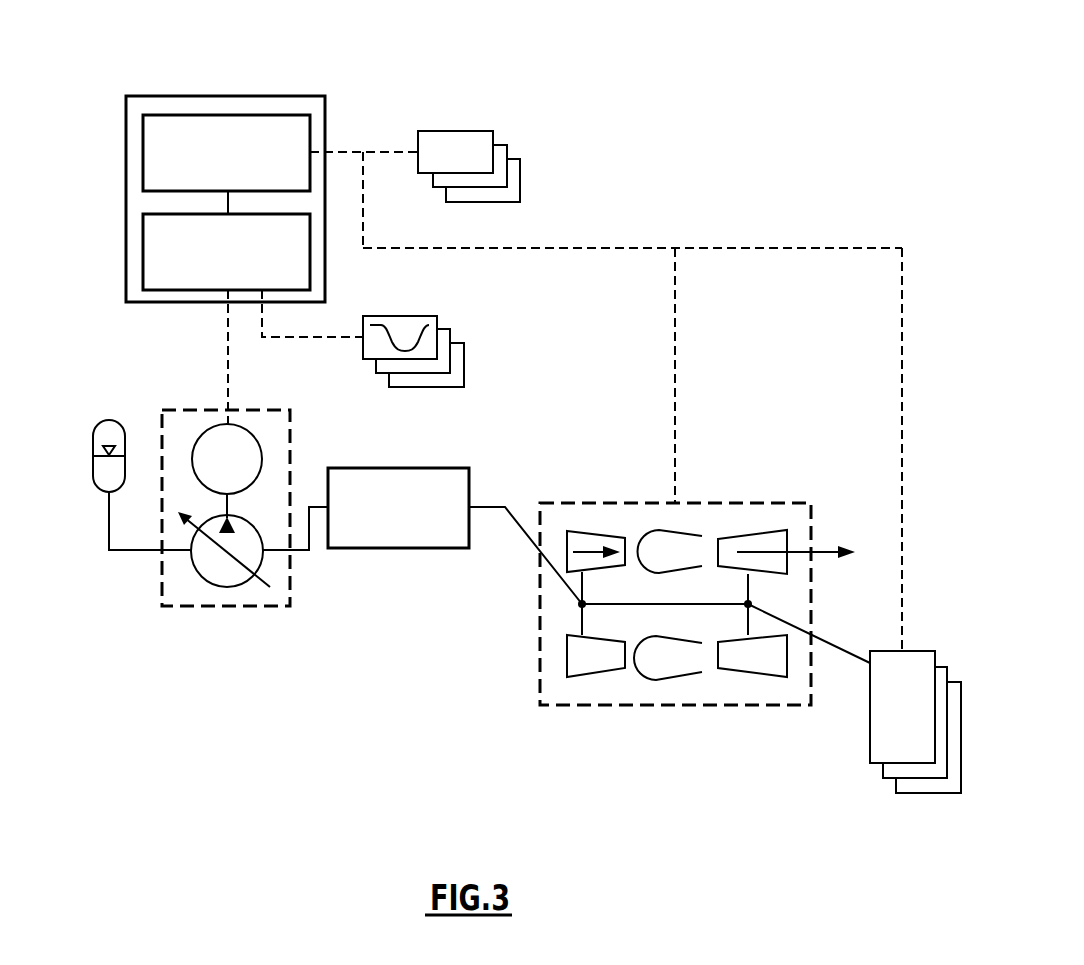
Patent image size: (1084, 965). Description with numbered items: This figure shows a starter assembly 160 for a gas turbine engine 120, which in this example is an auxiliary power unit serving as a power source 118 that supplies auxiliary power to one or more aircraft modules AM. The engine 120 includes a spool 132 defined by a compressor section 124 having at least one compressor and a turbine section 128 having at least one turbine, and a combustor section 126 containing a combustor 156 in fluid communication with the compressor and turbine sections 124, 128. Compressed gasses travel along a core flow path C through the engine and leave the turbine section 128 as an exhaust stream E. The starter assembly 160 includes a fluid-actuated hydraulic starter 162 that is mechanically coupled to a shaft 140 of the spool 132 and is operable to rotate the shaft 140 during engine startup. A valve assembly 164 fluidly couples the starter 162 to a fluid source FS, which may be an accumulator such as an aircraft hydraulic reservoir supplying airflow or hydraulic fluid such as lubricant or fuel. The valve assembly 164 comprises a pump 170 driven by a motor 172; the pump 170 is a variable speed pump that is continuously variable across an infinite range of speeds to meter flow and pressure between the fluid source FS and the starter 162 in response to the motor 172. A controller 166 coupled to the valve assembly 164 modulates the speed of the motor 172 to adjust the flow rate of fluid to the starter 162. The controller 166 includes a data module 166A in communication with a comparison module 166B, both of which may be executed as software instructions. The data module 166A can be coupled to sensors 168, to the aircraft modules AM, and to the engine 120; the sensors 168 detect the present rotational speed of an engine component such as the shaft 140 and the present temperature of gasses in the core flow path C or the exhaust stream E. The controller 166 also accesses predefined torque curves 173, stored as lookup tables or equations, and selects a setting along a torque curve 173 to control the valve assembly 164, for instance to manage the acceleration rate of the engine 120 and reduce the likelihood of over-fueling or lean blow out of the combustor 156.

The starter assembly 160 is at (141, 56).
The controller 166 is at (244, 90).
The data module 166A is at (143, 160).
The comparison module 166B is at (143, 260).
The sensors 168 is at (492, 131).
The torque curves 173 is at (437, 316).
The valve assembly 164 is at (173, 402).
The motor 172 is at (263, 455).
The pump 170 is at (263, 569).
The hydraulic starter 162 is at (421, 518).
The power source 118 is at (787, 423).
The gas turbine engine 120 is at (800, 487).
The compressor section 124 is at (579, 530).
The combustor section 126 is at (653, 530).
The turbine section 128 is at (756, 532).
The combustor 156 is at (668, 548).
The shaft 140 is at (672, 602).
The spool 132 is at (637, 604).
The fluid source FS is at (93, 468).
The core flow path C is at (590, 550).
The exhaust stream E is at (818, 550).
The aircraft modules AM is at (896, 793).